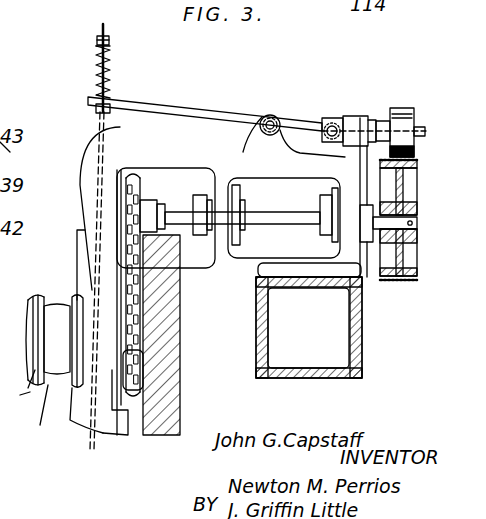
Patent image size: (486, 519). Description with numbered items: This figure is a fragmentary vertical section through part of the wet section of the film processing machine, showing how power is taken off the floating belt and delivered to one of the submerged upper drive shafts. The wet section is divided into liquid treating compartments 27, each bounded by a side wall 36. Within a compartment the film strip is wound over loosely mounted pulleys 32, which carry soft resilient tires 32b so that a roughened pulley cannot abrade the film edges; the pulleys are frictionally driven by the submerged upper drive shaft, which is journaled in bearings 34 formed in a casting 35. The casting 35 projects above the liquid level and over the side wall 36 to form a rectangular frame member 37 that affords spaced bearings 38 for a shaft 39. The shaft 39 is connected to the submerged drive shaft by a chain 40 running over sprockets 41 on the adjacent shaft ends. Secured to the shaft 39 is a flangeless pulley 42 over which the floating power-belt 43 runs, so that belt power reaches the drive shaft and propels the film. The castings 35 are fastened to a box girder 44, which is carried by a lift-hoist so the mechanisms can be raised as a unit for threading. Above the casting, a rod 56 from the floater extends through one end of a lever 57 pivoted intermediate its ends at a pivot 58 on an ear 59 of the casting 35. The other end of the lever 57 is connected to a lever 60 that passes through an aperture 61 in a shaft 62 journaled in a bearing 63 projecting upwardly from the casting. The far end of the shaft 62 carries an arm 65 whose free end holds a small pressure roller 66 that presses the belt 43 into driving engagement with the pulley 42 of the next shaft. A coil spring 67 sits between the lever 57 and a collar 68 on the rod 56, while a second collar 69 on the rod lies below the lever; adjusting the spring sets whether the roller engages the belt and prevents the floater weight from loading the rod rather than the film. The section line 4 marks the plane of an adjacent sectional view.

The section line 4- 4 is at (120, 125).
The liquid treating compartment 27 is at (133, 437).
The pulley 32 is at (35, 417).
The soft resilient tire 32b is at (19, 394).
The bearing 34 is at (97, 288).
The casting 35 is at (83, 185).
The side wall 36 is at (158, 430).
The rectangular frame member 37 is at (230, 267).
The bearing 38 is at (207, 203).
The shaft 39 is at (268, 218).
The chain 40 is at (130, 220).
The sprocket 41 is at (140, 354).
The flangeless pulley 42 is at (413, 257).
The floating power-belt 43 is at (418, 161).
The box girder 44 is at (362, 355).
The rod 56 is at (90, 450).
The lever 57 is at (162, 103).
The pivot 58 is at (270, 114).
The ear 59 is at (262, 118).
The lever 60 is at (331, 118).
The aperture 61 is at (344, 122).
The shaft 62 is at (426, 132).
The bearing 63 is at (369, 118).
The arm 65 is at (377, 118).
The pressure roller 66 is at (404, 110).
The coil spring 67 is at (95, 43).
The collar 68 is at (110, 42).
The collar 69 is at (96, 109).